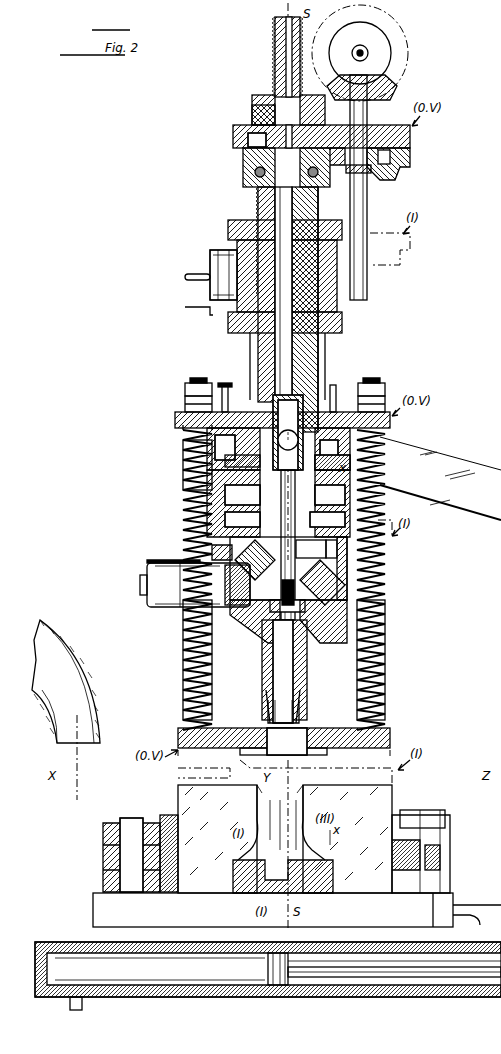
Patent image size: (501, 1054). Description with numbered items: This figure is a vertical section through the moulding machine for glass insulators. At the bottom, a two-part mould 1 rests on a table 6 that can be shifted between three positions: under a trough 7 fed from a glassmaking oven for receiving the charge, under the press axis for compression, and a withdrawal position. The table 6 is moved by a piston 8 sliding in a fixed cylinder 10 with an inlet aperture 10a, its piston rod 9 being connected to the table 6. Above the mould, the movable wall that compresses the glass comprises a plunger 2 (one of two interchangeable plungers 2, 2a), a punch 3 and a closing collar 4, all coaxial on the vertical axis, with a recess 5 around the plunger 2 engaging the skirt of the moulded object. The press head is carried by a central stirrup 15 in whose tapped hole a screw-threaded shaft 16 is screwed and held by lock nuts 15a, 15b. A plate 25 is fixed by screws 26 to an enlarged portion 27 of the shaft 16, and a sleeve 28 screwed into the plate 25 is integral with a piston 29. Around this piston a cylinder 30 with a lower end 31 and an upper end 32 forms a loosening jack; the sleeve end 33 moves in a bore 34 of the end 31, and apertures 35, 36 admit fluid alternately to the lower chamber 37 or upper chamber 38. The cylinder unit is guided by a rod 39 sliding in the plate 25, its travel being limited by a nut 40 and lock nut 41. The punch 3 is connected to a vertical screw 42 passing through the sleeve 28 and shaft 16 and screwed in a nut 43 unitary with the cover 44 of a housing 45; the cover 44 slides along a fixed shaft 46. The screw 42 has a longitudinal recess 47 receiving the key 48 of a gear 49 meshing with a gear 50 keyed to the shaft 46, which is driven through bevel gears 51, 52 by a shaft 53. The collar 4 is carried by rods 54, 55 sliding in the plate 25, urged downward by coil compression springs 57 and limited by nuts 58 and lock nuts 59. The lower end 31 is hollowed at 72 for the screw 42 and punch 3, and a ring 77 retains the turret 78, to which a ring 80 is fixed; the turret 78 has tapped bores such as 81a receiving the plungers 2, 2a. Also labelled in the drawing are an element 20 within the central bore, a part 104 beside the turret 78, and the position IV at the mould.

The mould 1 is at (198, 890).
The plunger 2 is at (262, 686).
The plunger 2a is at (152, 562).
The punch 3 is at (280, 608).
The closing collar 4 is at (322, 735).
The recess 5 is at (270, 715).
The table 6 is at (345, 900).
The trough 7 is at (80, 672).
The piston 8 is at (268, 975).
The piston rod 9 is at (332, 980).
The fixed cylinder 10 is at (184, 990).
The aperture 10a is at (76, 997).
The central stirrup 15 is at (337, 313).
The lock nut 15a is at (228, 230).
The lock nut 15b is at (228, 327).
The screw-threaded shaft 16 is at (318, 355).
The plunger 20 is at (288, 425).
The plate 25 is at (390, 423).
The screws 26 is at (226, 395).
The enlarged portion 27 is at (336, 400).
The sleeve 28 is at (233, 449).
The piston 29 is at (242, 495).
The cylinder 30 is at (207, 505).
The cylinder end 31 is at (291, 568).
The cylinder end 32 is at (241, 462).
The end of sleeve 33 is at (278, 567).
The bore 34 is at (311, 549).
The inlet and outlet aperture 35 is at (220, 552).
The inlet and outlet aperture 36 is at (418, 458).
The lower chamber 37 is at (327, 523).
The upper chamber 38 is at (325, 495).
The rod 39 is at (186, 443).
The nut 40 is at (334, 459).
The lock nut 41 is at (332, 449).
The vertical screw 42 is at (275, 60).
The nut 43 is at (258, 95).
The cover 44 is at (252, 115).
The housing 45 is at (243, 174).
The fixed shaft 46 is at (368, 203).
The longitudinal recess 47 is at (262, 210).
The key 48 is at (256, 147).
The gear 49 is at (240, 138).
The gear 50 is at (385, 172).
The bevel gear 51 is at (385, 87).
The bevel gear 52 is at (395, 38).
The shaft 53 is at (360, 45).
The rod 54 is at (186, 660).
The rod 55 is at (386, 650).
The coil compression spring 57 is at (386, 569).
The nut 58 is at (385, 402).
The lock nut 59 is at (385, 388).
The hollowed-out cavity 72 is at (326, 549).
The ring 77 is at (242, 522).
The turret 78 is at (250, 630).
The ring 80 is at (318, 598).
The tapped bore 81a is at (225, 585).
The wedge block right 104 is at (336, 643).
The mould core IV is at (283, 876).